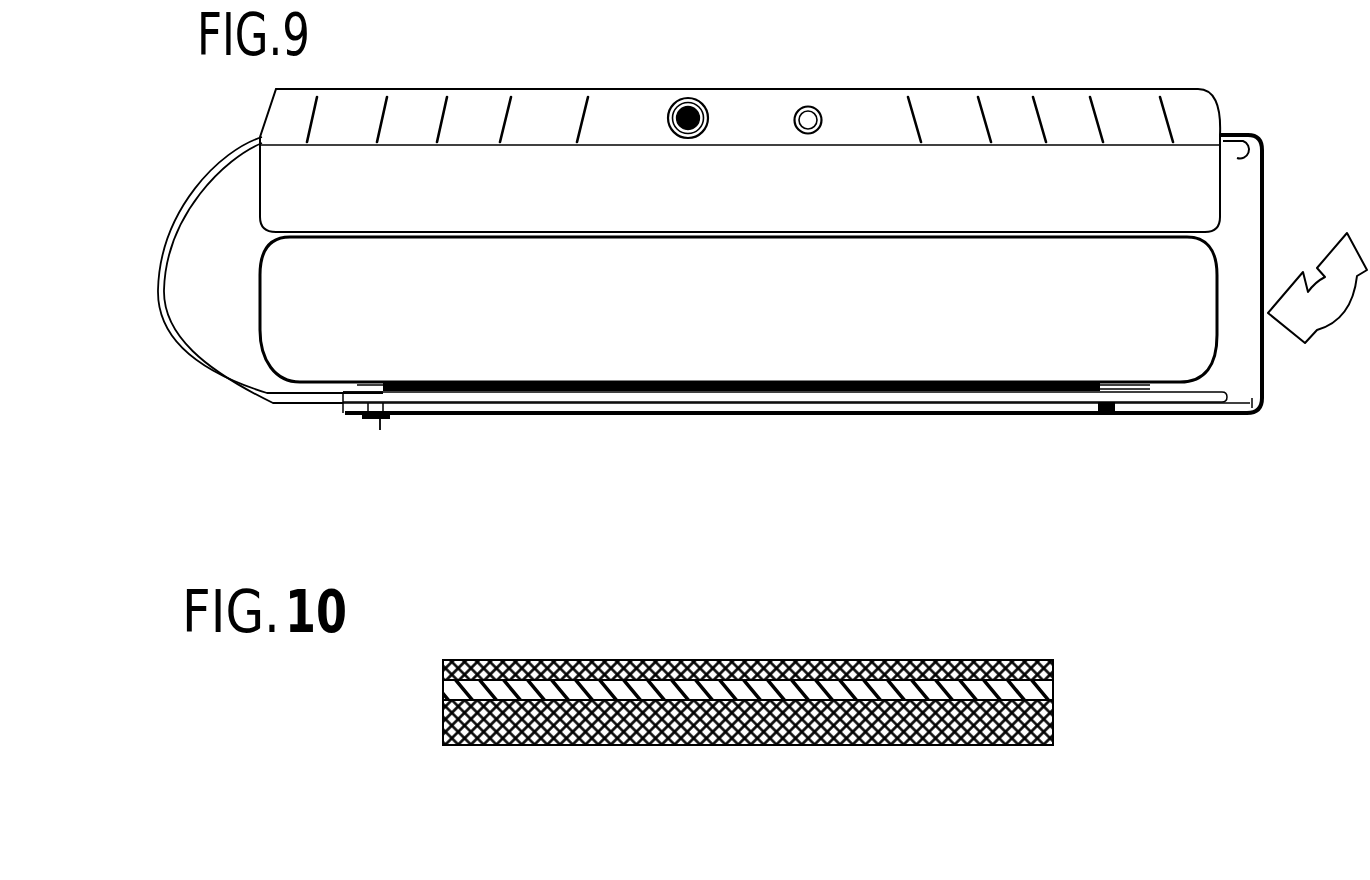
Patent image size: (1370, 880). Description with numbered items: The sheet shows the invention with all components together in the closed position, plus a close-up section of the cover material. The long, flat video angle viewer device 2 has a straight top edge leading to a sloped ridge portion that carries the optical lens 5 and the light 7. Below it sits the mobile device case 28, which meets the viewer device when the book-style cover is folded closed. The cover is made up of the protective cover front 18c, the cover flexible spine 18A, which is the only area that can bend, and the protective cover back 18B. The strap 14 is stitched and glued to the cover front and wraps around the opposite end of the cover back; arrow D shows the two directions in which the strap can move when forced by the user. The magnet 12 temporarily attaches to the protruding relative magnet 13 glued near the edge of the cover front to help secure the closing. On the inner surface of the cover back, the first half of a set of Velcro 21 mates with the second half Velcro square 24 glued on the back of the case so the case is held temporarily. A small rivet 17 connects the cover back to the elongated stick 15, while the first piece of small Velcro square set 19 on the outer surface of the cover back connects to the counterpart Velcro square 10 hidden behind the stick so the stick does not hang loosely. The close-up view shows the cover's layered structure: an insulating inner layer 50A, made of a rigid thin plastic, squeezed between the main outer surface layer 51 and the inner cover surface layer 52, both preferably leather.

In FIG. 9, the video angle viewer device 2 is at (1196, 206).
In FIG. 9, the optical lens 5 is at (672, 105).
In FIG. 9, the light 7 is at (812, 107).
In FIG. 9, the counterpart Velcro square 10 is at (1110, 412).
In FIG. 9, the magnet 12 is at (1193, 408).
In FIG. 9, the protruding relative magnet 13 is at (1240, 405).
In FIG. 9, the strap 14 is at (1278, 181).
In FIG. 9, the elongated stick 15 is at (500, 417).
In FIG. 9, the small rivet 17 is at (380, 430).
In FIG. 9, the cover flexible spine 18A is at (203, 362).
In FIG. 9, the protective cover back 18B is at (297, 398).
In FIG. 9, the protective cover front 18c is at (1288, 125).
In FIG. 9, the first piece of small Velcro square set 19 is at (1110, 402).
In FIG. 9, the first half of a set of Velcro 21 is at (357, 388).
In FIG. 9, the second half Velcro square 24 is at (1100, 395).
In FIG. 9, the mobile device case 28 is at (297, 272).
In FIG. 10, the insulating inner layer 50A is at (443, 690).
In FIG. 10, the main outer surface layer 51 is at (1056, 720).
In FIG. 10, the inner cover surface layer 52 is at (1097, 655).
In FIG. 9, the arrow D is at (1317, 288).